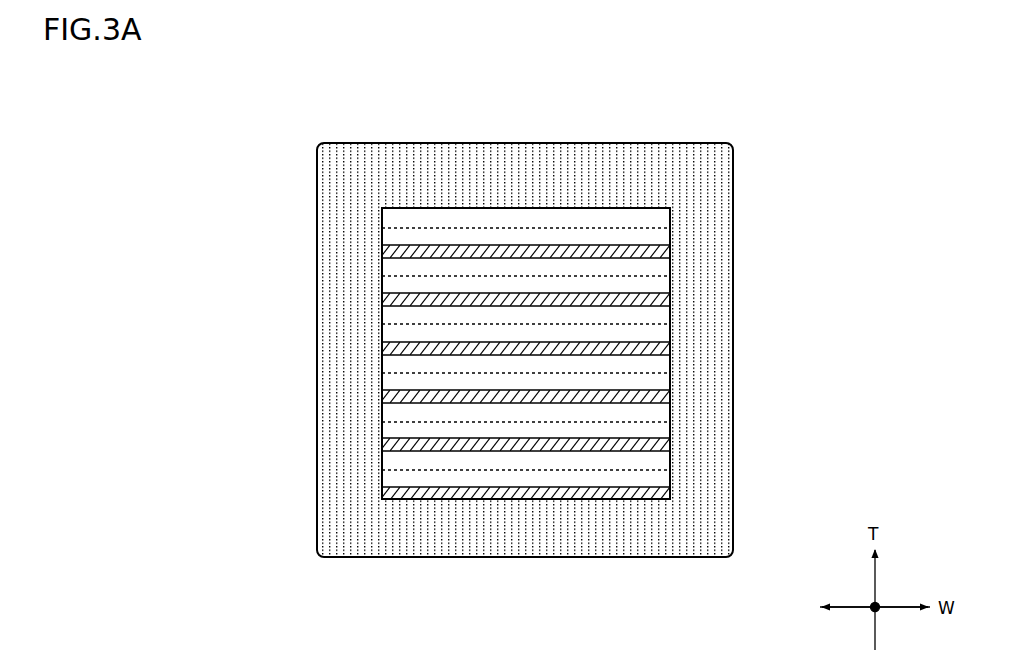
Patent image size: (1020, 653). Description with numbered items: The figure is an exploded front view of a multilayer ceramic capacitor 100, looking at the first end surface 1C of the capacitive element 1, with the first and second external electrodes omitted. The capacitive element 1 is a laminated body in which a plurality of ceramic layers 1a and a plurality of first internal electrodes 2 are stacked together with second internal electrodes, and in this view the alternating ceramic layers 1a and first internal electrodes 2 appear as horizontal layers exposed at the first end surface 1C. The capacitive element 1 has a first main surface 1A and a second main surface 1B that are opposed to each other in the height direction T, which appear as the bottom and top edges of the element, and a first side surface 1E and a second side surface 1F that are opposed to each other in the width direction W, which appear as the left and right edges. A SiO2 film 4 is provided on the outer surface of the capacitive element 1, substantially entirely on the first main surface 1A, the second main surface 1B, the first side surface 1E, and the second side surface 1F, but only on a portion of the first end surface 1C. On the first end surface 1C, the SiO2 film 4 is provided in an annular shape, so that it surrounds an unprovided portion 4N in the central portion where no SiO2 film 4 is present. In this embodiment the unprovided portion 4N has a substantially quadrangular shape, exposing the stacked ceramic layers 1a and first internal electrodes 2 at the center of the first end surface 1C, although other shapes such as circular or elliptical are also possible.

The multilayer ceramic capacitor 100 is at (183, 65).
The capacitive element 1 is at (432, 218).
The ceramic layers 1a is at (385, 275).
The first main surface 1A is at (532, 563).
The second main surface 1B is at (522, 142).
The first end surface 1C is at (529, 317).
The first side surface 1E is at (313, 361).
The second side surface 1F is at (739, 357).
The first internal electrodes 2 is at (385, 250).
The SiO2 film 4 is at (368, 170).
The unprovided portion 4N is at (643, 232).